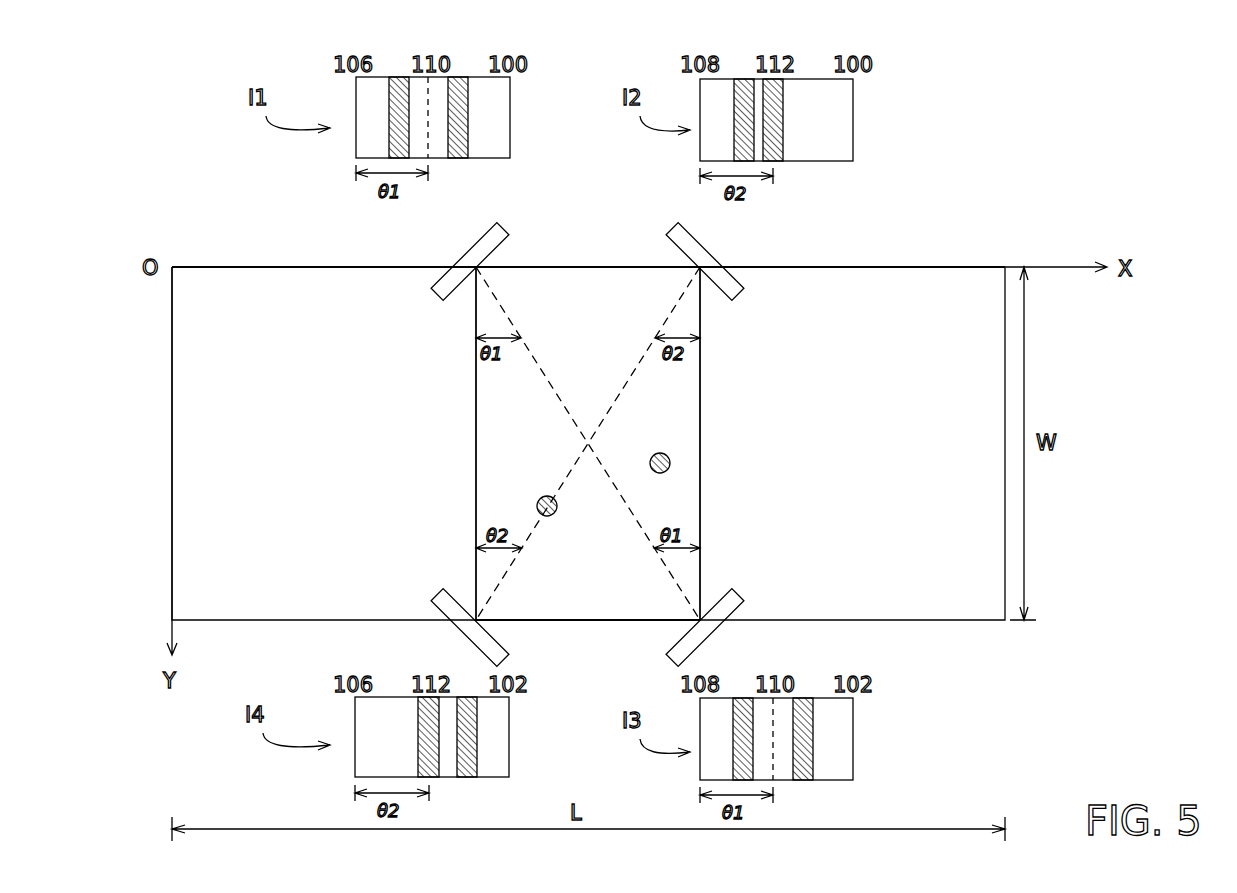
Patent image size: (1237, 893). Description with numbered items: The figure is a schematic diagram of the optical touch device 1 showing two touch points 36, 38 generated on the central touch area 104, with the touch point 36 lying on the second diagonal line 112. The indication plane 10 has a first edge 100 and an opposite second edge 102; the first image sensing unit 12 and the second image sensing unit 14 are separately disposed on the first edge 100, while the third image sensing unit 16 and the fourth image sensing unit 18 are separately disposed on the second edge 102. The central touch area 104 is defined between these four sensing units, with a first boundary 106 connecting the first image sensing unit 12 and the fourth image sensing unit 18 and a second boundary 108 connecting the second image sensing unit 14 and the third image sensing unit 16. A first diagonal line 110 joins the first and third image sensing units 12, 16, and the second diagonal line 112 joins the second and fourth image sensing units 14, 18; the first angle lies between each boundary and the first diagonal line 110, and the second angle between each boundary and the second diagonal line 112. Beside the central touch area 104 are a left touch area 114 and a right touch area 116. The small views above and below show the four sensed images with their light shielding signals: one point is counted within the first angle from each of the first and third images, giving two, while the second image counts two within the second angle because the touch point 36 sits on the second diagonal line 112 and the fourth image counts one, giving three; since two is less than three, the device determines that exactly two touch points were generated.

The optical touch device 1 is at (1022, 168).
The indication plane 10 is at (990, 634).
The first image sensing unit 12 is at (442, 294).
The second image sensing unit 14 is at (733, 294).
The third image sensing unit 16 is at (739, 588).
The fourth image sensing unit 18 is at (436, 588).
The touch point 36 is at (546, 496).
The touch point 38 is at (660, 453).
The first edge 100 is at (589, 265).
The second edge 102 is at (575, 624).
The central touch area 104 is at (522, 287).
The first boundary 106 is at (476, 440).
The second boundary 108 is at (700, 440).
The first diagonal line 110 is at (548, 373).
The second diagonal line 112 is at (632, 373).
The left touch area 114 is at (314, 290).
The right touch area 116 is at (870, 290).